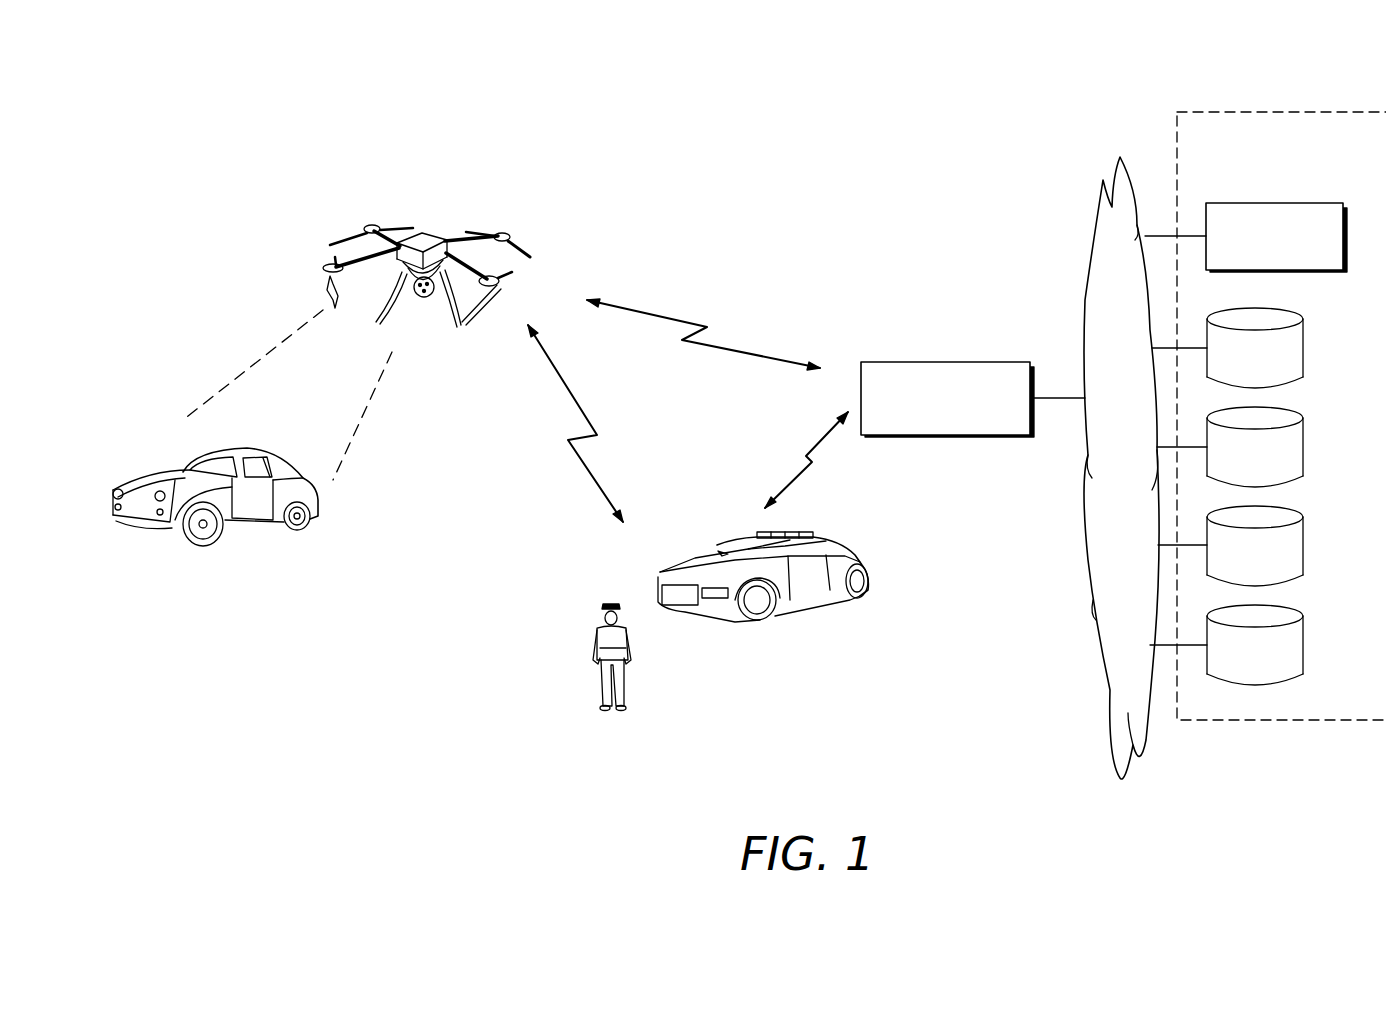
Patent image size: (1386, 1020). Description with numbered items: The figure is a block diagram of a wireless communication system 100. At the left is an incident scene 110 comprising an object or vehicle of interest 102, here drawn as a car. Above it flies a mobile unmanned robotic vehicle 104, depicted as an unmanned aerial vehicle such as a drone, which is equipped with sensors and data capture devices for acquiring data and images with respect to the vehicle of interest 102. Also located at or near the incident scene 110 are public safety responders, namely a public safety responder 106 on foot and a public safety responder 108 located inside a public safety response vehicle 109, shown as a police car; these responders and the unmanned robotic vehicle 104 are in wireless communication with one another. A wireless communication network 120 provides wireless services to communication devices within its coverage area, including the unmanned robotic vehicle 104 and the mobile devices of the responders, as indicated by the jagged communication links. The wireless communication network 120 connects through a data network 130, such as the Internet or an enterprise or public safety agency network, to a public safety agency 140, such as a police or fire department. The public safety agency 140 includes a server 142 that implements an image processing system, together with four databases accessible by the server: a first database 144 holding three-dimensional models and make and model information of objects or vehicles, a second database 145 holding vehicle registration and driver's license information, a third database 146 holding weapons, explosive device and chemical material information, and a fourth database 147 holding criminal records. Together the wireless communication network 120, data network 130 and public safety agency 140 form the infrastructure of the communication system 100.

The wireless communication system 100 is at (214, 90).
The object or vehicle of interest 102 is at (262, 448).
The mobile unmanned robotic vehicle (URV) 104 is at (495, 240).
The public safety responder 106 is at (622, 648).
The public safety responder 108 is at (857, 548).
The public safety response vehicle 109 is at (800, 535).
The incident scene 110 is at (327, 190).
The wireless communication network 120 is at (947, 362).
The data network 130 is at (1122, 158).
The public safety agency 140 is at (1296, 112).
The server 142 is at (1276, 203).
The first database 144 is at (1303, 346).
The second database 145 is at (1303, 445).
The third database 146 is at (1303, 544).
The fourth database 147 is at (1303, 643).